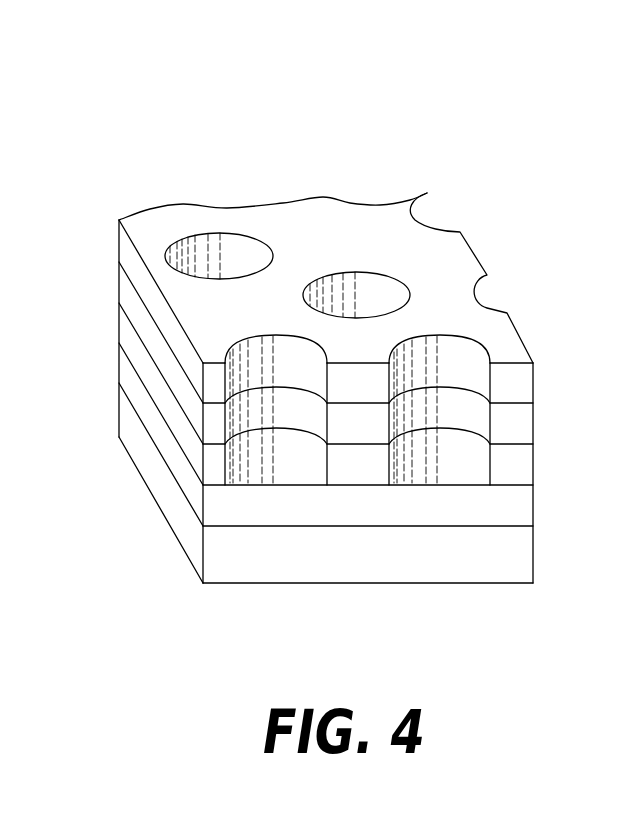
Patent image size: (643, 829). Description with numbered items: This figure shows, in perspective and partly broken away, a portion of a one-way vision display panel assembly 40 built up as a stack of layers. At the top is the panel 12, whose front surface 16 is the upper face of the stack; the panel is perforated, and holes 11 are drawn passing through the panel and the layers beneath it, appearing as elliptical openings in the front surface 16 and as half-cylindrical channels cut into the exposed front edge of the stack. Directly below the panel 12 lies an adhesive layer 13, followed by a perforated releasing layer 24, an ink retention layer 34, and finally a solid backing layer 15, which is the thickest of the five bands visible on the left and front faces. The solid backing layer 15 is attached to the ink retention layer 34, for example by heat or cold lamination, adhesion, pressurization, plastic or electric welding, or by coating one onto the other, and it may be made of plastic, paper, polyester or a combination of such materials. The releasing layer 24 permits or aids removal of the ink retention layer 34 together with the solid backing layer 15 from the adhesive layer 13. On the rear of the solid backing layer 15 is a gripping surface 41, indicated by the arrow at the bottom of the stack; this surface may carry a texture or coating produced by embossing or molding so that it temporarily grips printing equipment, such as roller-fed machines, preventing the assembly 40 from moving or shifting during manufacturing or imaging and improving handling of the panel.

The through holes 11 is at (236, 230).
The panel 12 is at (121, 243).
The adhesive layer 13 is at (121, 283).
The perforated releasing layer 24 is at (121, 321).
The ink retention layer 34 is at (121, 366).
The solid backing layer 15 is at (121, 413).
The front surface 16 is at (455, 252).
The one-way vision display panel assembly 40 is at (478, 154).
The gripping surface 41 is at (238, 602).